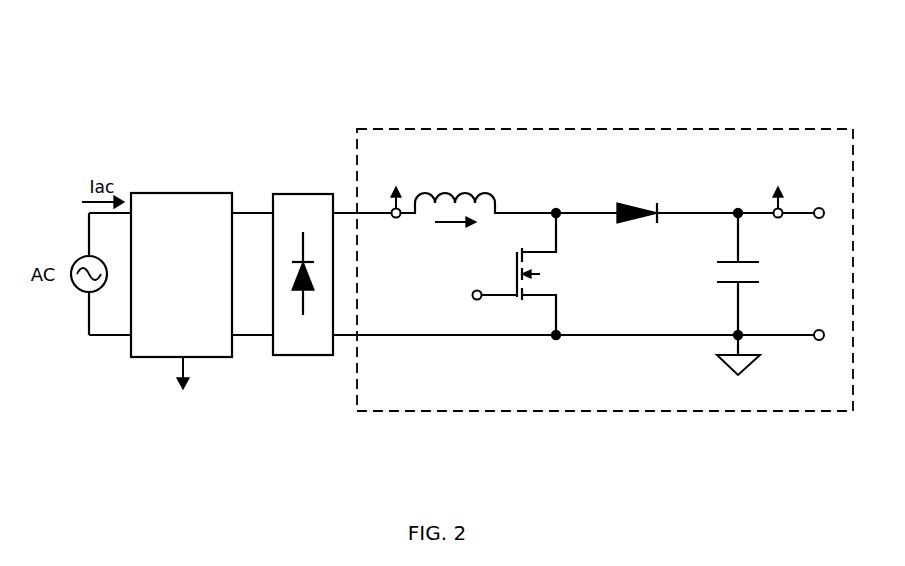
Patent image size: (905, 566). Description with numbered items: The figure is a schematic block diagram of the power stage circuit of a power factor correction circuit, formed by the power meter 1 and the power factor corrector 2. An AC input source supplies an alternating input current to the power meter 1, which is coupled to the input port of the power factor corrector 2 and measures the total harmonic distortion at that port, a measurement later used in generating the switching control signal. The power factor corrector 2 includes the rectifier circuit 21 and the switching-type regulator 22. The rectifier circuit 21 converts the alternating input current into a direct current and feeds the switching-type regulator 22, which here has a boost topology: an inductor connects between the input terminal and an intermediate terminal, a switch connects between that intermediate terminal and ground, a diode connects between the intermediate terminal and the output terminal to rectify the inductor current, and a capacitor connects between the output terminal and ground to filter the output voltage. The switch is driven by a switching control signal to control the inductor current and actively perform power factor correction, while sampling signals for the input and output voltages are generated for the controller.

The power meter 1 is at (168, 194).
The power factor corrector 2 is at (613, 92).
The rectifier circuit 21 is at (300, 194).
The switching-type regulator 22 is at (527, 128).